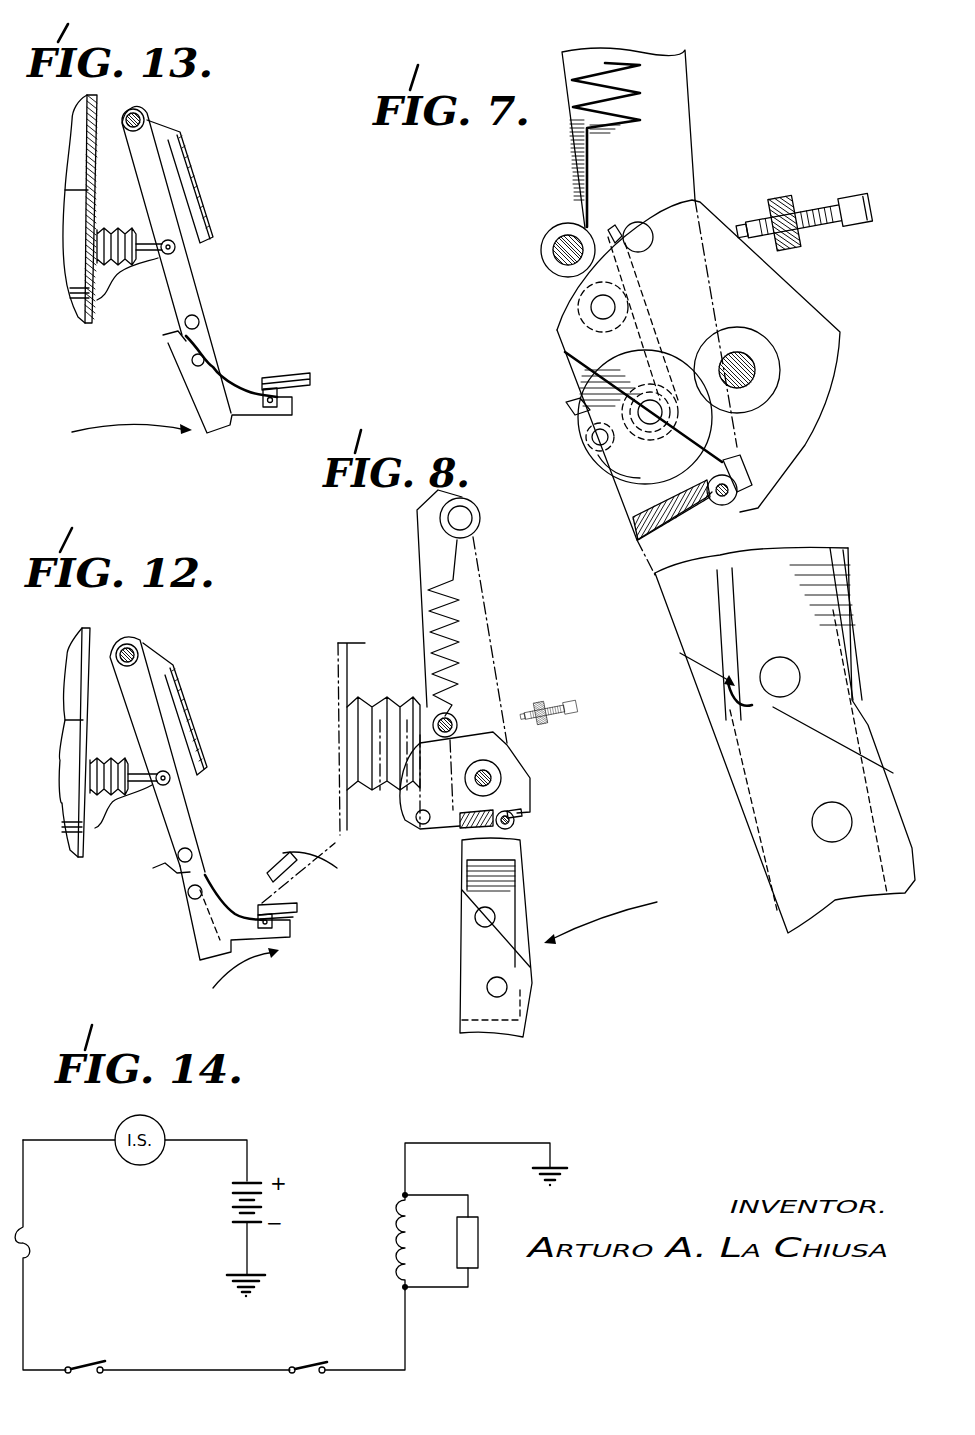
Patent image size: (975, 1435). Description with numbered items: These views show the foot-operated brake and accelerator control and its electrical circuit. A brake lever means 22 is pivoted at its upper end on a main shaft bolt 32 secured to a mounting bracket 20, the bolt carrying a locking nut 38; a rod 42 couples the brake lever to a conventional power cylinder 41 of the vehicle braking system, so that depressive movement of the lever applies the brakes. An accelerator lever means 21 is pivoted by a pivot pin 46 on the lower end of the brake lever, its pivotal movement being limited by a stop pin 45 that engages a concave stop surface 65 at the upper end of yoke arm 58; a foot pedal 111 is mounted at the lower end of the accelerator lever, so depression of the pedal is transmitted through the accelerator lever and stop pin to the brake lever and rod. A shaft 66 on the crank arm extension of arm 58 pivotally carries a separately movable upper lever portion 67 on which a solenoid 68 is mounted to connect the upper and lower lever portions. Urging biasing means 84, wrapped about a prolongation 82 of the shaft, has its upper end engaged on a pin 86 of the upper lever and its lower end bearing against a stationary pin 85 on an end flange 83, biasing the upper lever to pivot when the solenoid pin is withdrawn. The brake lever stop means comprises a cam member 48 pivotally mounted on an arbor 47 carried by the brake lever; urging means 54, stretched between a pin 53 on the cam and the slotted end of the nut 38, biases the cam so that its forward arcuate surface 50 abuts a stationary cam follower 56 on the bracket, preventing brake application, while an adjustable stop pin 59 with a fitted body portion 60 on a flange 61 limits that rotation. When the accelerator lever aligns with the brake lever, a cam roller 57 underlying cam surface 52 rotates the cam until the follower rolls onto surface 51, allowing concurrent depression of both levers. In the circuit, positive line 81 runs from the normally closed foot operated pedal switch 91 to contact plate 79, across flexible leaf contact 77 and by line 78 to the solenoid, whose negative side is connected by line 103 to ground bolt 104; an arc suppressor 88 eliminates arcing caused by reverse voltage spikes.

In FIG. 13, the mounting bracket 20 is at (207, 169).
In FIG. 12, the mounting bracket 20 is at (192, 697).
In FIG. 13, the accelerator lever means 21 is at (220, 375).
In FIG. 12, the accelerator lever means 21 is at (160, 885).
In FIG. 7, the accelerator lever means 21 is at (735, 803).
In FIG. 8, the accelerator lever means 21 is at (465, 950).
In FIG. 13, the brake lever means 22 is at (195, 272).
In FIG. 12, the brake lever means 22 is at (193, 808).
In FIG. 7, the brake lever means 22 is at (852, 574).
In FIG. 8, the brake lever means 22 is at (490, 617).
In FIG. 13, the main shaft bolt 32 is at (147, 123).
In FIG. 12, the main shaft bolt 32 is at (141, 640).
In FIG. 8, the locking nut 38 is at (481, 510).
In FIG. 13, the power cylinder 41 is at (72, 288).
In FIG. 12, the power cylinder 41 is at (63, 850).
In FIG. 13, the rod 42 is at (147, 233).
In FIG. 12, the rod 42 is at (142, 767).
In FIG. 8, the rod 42 is at (379, 739).
In FIG. 13, the stop pin 45 is at (199, 320).
In FIG. 12, the stop pin 45 is at (185, 846).
In FIG. 7, the stop pin 45 is at (802, 678).
In FIG. 8, the stop pin 45 is at (496, 915).
In FIG. 13, the pivot pin 46 is at (192, 360).
In FIG. 12, the pivot pin 46 is at (192, 900).
In FIG. 7, the pivot pin 46 is at (814, 830).
In FIG. 8, the pivot pin 46 is at (507, 988).
In FIG. 7, the arbor 47 is at (748, 364).
In FIG. 8, the arbor 47 is at (491, 775).
In FIG. 7, the cam member 48 is at (836, 355).
In FIG. 8, the cam member 48 is at (535, 780).
In FIG. 7, the forward arcuate surface 50 is at (682, 198).
In FIG. 8, the forward arcuate surface 50 is at (406, 812).
In FIG. 7, the cam surface 51 is at (805, 300).
In FIG. 8, the cam surface 51 is at (487, 742).
In FIG. 7, the cam surface 52 is at (740, 465).
In FIG. 8, the cam surface 52 is at (522, 812).
In FIG. 7, the pin 53 is at (592, 305).
In FIG. 8, the pin 53 is at (425, 828).
In FIG. 7, the urging means 54 is at (650, 88).
In FIG. 8, the urging means 54 is at (437, 613).
In FIG. 7, the cam follower 56 is at (556, 235).
In FIG. 8, the cam follower 56 is at (448, 713).
In FIG. 7, the cam roller 57 is at (740, 500).
In FIG. 8, the cam roller 57 is at (515, 821).
In FIG. 7, the second arm 58 is at (632, 529).
In FIG. 8, the second arm 58 is at (457, 834).
In FIG. 7, the adjustable stop pin 59 is at (751, 226).
In FIG. 8, the adjustable stop pin 59 is at (531, 694).
In FIG. 7, the fitted body portion 60 is at (833, 195).
In FIG. 8, the fitted body portion 60 is at (563, 697).
In FIG. 7, the flange 61 is at (784, 198).
In FIG. 8, the flange 61 is at (539, 700).
In FIG. 7, the stop surface 65 is at (738, 665).
In FIG. 7, the shaft 66 is at (575, 368).
In FIG. 7, the upper lever portion 67 is at (694, 138).
In FIG. 14, the solenoid 68 is at (398, 1245).
In FIG. 14, the flexible leaf switch contact 77 is at (320, 1375).
In FIG. 14, the lead line 78 is at (405, 1334).
In FIG. 14, the contact plate 79 is at (292, 1367).
In FIG. 14, the positive lead wire 81 is at (23, 1307).
In FIG. 7, the shaft prolongation 82 is at (650, 420).
In FIG. 7, the end flange 83 is at (640, 482).
In FIG. 7, the urging biasing means 84 is at (567, 406).
In FIG. 7, the stationary pin 85 is at (593, 438).
In FIG. 7, the pin 86 is at (633, 222).
In FIG. 14, the arc suppressor 88 is at (478, 1256).
In FIG. 14, the foot operated pedal switch 91 is at (88, 1375).
In FIG. 14, the lead line 103 is at (421, 1143).
In FIG. 14, the ground bolt 104 is at (562, 1166).
In FIG. 13, the foot pedal 111 is at (280, 378).
In FIG. 12, the foot pedal 111 is at (263, 912).